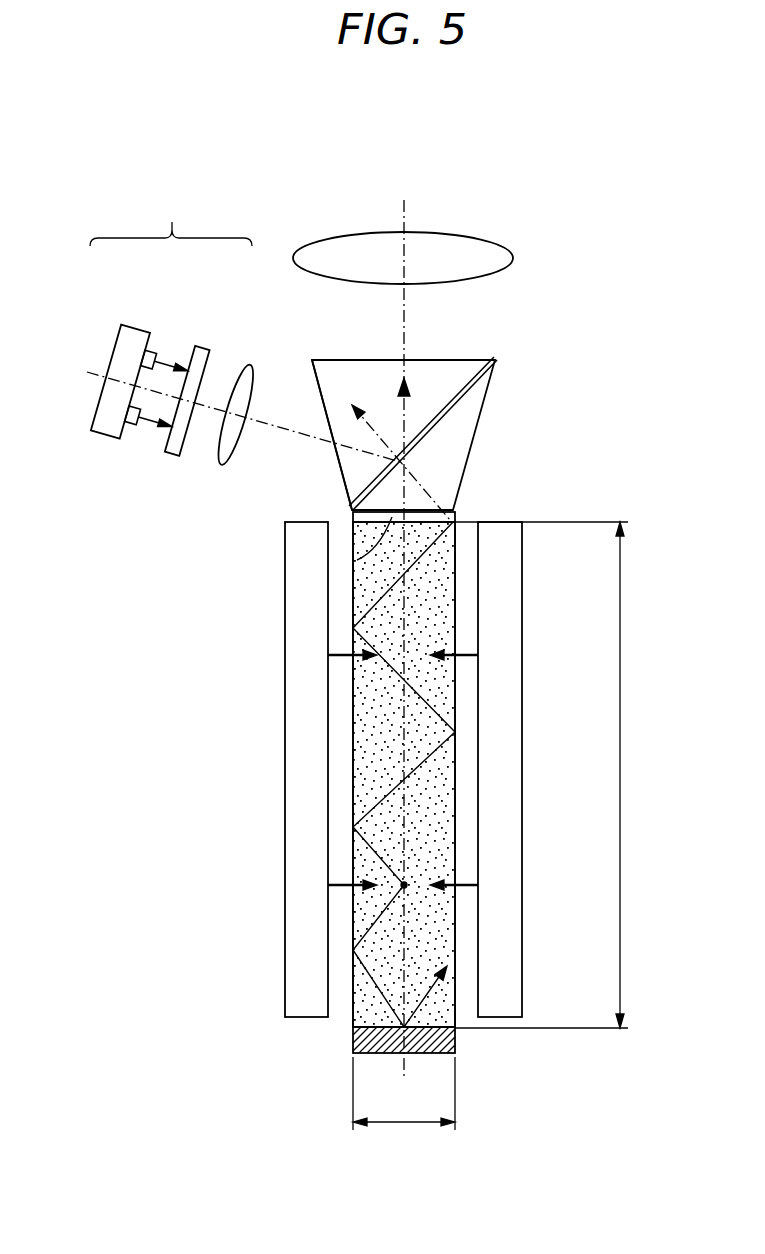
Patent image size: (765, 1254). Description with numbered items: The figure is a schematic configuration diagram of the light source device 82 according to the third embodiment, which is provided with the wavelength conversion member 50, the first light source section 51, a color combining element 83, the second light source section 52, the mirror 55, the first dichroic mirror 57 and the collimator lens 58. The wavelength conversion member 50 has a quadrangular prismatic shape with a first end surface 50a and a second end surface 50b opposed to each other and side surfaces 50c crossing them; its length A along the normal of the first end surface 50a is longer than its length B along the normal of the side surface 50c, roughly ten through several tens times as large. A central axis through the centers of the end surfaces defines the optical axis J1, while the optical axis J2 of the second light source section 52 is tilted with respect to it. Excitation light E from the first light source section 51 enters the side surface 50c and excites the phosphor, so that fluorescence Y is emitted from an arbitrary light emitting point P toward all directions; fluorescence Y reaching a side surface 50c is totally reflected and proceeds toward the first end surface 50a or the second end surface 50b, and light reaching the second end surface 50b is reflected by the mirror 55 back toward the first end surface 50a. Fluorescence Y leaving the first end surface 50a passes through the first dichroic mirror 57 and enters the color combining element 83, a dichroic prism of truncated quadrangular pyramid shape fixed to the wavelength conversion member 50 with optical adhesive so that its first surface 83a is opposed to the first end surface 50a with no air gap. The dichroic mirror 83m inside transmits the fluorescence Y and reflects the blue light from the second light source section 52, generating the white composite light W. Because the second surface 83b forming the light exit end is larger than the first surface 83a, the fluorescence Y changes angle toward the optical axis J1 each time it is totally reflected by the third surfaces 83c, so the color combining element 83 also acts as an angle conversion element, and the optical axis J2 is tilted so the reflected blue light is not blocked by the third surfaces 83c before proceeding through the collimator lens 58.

The light source device 82 is at (362, 162).
The collimator lens 58 is at (355, 248).
The color combining element 83 is at (468, 455).
The first surface 83a is at (357, 530).
The second surface 83b is at (475, 358).
The third surfaces 83c is at (336, 470).
The dichroic mirror 83m is at (457, 408).
The second light source section 52 is at (171, 218).
The wavelength conversion member 50 is at (437, 852).
The first end surface 50a is at (447, 510).
The second end surface 50b is at (430, 1030).
The side surfaces 50c is at (353, 728).
The first light source section 51 is at (288, 665).
The mirror 55 is at (381, 1053).
The first dichroic mirror 57 is at (357, 560).
The optical axis J1 is at (404, 208).
The optical axis J2 is at (291, 430).
The composite light W is at (362, 428).
The excitation light E is at (335, 885).
The fluorescence Y is at (385, 797).
The light emitting point P is at (404, 885).
The length A is at (549, 775).
The length B is at (404, 1093).